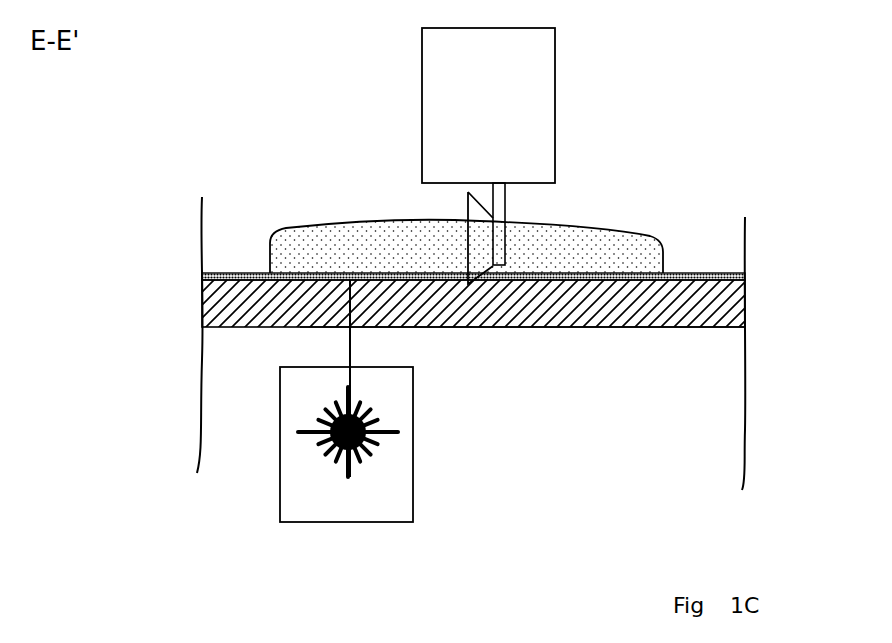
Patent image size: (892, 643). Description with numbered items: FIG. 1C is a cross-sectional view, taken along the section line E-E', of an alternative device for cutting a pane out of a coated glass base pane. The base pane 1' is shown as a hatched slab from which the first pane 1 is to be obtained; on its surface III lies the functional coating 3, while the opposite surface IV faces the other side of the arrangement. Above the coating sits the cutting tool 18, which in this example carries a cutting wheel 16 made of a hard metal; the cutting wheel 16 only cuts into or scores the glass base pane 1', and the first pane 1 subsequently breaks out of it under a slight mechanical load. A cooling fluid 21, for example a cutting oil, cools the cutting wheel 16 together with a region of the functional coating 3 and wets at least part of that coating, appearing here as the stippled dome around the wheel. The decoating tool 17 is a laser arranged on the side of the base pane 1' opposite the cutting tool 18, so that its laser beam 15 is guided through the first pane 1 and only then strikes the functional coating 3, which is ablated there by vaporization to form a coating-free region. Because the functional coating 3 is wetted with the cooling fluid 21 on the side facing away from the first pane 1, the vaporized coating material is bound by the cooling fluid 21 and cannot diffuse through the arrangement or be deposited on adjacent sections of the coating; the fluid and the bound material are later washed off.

The first pane 1 is at (473, 358).
The base pane 1' is at (522, 382).
The functional coating 3 is at (672, 272).
The laser beam 15 is at (350, 333).
The cutting wheel 16 is at (478, 238).
The decoating tool 17 is at (413, 407).
The cutting tool 18 is at (555, 117).
The cooling fluid 21 is at (347, 225).
The surface III of the base pane III is at (211, 267).
The section indicator IV is at (231, 331).